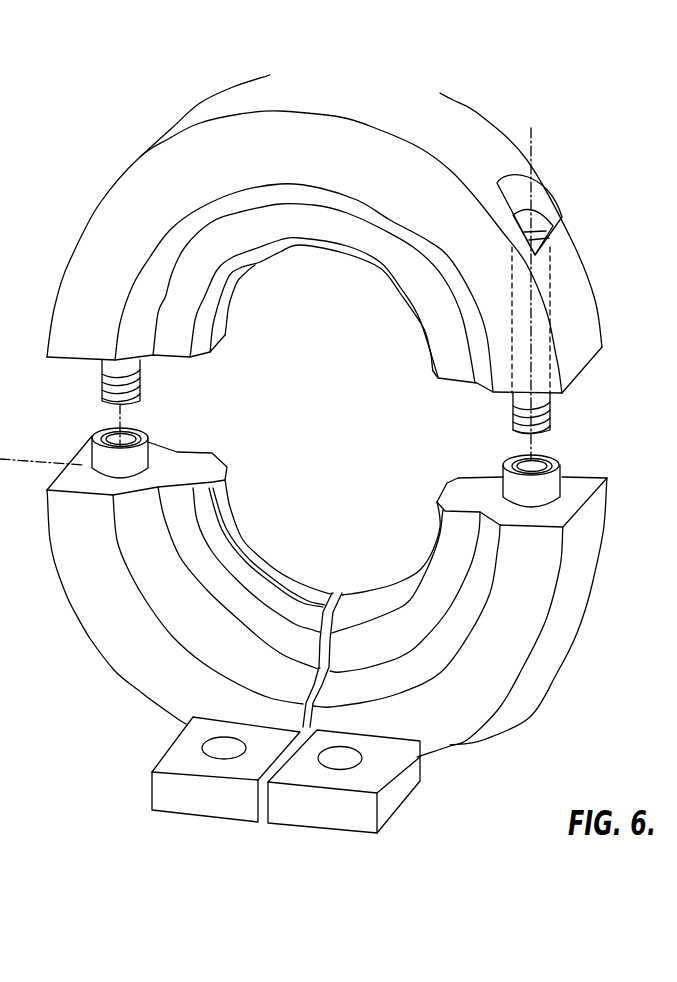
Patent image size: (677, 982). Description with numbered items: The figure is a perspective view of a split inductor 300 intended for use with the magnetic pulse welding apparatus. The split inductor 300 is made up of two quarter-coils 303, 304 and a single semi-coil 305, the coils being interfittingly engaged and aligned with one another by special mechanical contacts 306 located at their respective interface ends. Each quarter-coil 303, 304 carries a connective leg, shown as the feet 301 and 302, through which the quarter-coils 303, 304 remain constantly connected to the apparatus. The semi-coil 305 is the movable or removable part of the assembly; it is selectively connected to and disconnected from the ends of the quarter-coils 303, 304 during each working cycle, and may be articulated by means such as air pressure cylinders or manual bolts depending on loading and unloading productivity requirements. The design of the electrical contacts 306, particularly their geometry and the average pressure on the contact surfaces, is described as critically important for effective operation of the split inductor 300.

The split inductor 300 is at (108, 828).
The connective leg 301 is at (200, 808).
The connective leg 302 is at (403, 794).
The quarter-coil 303 is at (134, 665).
The quarter-coil 304 is at (502, 669).
The semi-coil 305 is at (118, 206).
The mechanical contact 306 is at (149, 458).